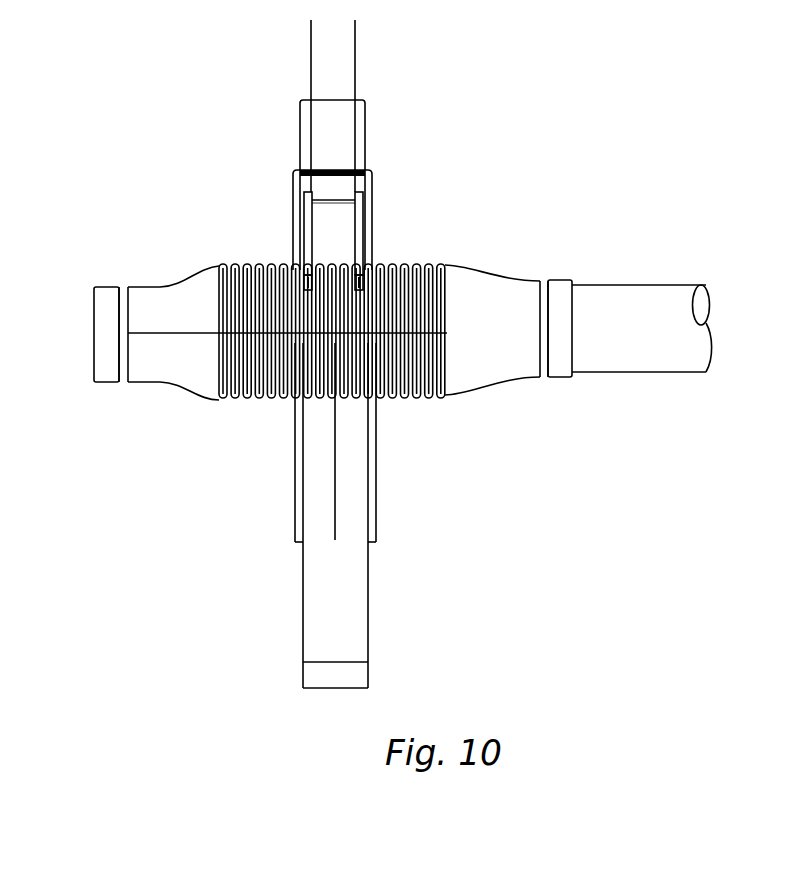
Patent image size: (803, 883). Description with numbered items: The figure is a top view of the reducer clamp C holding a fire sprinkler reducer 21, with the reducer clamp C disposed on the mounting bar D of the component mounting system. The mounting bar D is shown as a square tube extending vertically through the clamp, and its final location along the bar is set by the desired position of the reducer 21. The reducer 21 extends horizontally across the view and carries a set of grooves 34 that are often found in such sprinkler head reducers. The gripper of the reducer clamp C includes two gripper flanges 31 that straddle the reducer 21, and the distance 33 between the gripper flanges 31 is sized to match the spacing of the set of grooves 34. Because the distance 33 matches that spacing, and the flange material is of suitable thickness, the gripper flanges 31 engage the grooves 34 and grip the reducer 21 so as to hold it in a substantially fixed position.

The reducer clamp C is at (183, 228).
The mounting bar D is at (368, 601).
The fire sprinkler reducer 21 is at (475, 293).
The gripper flanges 31 is at (293, 203).
The distance 33 is at (260, 33).
The set of grooves 34 is at (413, 262).